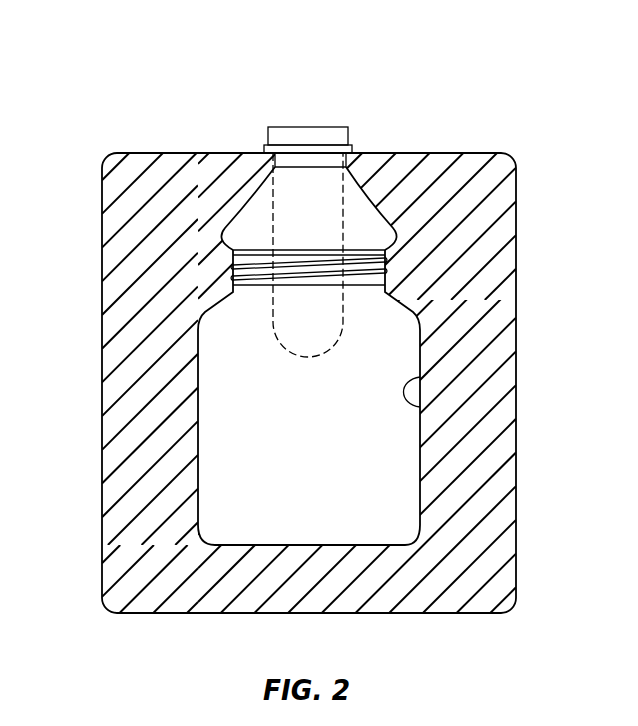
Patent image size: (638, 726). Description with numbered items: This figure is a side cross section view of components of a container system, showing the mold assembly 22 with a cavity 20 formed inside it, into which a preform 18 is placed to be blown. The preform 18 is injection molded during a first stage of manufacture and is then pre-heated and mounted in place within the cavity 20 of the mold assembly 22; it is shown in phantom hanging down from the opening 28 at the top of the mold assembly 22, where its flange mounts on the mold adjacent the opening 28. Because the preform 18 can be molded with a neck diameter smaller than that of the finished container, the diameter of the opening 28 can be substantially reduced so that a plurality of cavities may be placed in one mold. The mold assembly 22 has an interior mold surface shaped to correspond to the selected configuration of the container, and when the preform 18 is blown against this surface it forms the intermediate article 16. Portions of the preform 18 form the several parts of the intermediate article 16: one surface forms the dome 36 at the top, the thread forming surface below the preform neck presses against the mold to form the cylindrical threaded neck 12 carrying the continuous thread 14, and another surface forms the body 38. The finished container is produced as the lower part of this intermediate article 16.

The threaded neck 12 is at (368, 280).
The continuous thread 14 is at (384, 257).
The intermediate article 16 is at (185, 348).
The preform 18 is at (277, 208).
The cavity 20 is at (420, 377).
The mold assembly 22 is at (485, 522).
The opening 28 is at (334, 148).
The dome 36 is at (223, 228).
The body 38 is at (223, 477).